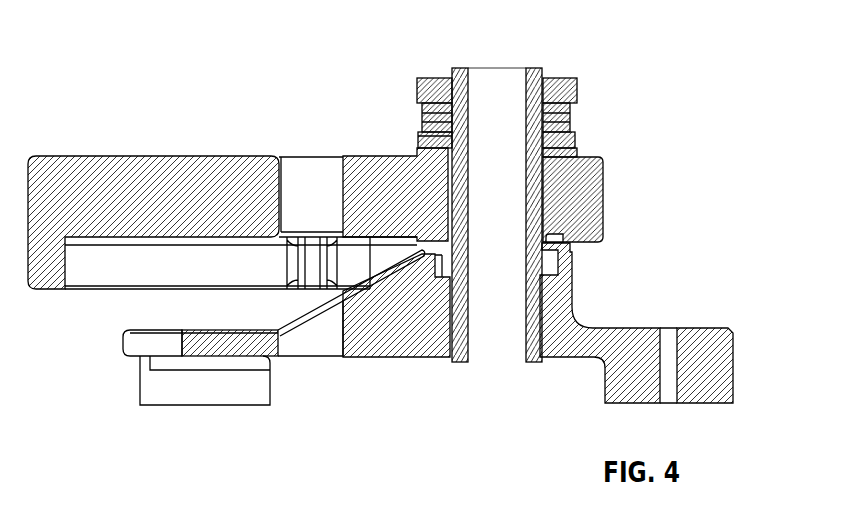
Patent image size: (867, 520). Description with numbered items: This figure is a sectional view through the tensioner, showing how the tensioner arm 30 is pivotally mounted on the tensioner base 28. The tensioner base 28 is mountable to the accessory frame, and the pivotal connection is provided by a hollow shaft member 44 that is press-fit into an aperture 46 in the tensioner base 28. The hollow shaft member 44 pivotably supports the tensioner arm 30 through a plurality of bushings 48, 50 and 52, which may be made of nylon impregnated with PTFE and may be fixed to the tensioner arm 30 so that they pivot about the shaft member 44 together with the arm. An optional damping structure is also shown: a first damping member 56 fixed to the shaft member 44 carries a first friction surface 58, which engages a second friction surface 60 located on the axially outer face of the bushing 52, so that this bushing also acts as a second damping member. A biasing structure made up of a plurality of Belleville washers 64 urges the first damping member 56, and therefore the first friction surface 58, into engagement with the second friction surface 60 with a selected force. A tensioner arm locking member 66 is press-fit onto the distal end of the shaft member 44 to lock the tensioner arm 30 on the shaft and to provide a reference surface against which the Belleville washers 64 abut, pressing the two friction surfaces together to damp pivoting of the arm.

The tensioner base 28 is at (707, 340).
The tensioner arm 30 is at (377, 157).
The hollow shaft member 44 is at (538, 187).
The aperture 46 is at (539, 318).
The bushing 48 is at (575, 235).
The bushing 50 is at (545, 207).
The bushing 52 is at (557, 152).
The first damping member 56 is at (577, 143).
The first friction surface 58 is at (447, 150).
The second friction surface 60 is at (418, 136).
The Belleville washers 64 is at (573, 110).
The tensioner arm locking member 66 is at (573, 92).